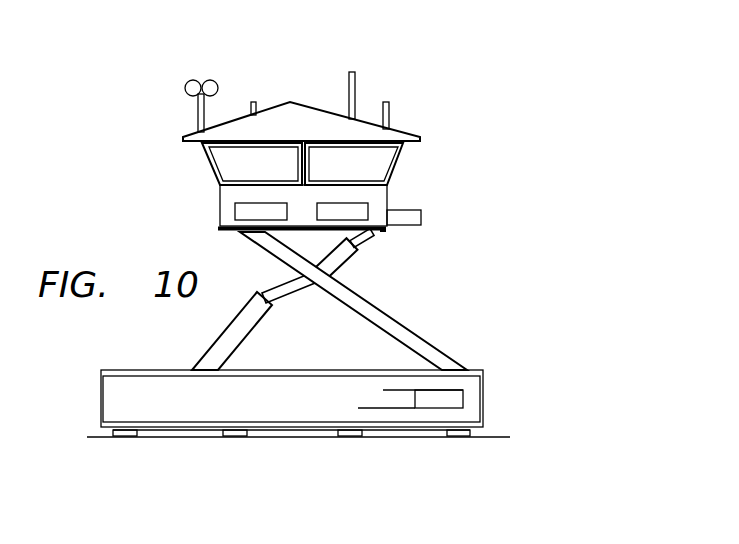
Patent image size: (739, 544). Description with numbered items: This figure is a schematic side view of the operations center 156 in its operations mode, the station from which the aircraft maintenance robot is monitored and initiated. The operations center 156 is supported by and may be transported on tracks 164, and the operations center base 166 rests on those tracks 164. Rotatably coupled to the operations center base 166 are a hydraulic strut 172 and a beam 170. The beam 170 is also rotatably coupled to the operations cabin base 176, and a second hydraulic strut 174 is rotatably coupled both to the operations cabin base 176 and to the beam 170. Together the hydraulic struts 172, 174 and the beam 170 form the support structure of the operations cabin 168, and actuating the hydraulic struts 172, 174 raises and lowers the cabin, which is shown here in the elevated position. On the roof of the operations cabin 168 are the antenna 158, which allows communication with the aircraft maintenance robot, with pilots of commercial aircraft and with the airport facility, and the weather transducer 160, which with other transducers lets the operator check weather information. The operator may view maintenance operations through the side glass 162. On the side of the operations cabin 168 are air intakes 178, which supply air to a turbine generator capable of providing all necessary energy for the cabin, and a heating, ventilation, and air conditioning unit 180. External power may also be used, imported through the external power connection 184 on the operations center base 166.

The operations center 156 is at (540, 150).
The antenna 158 is at (258, 110).
The weather transducer 160 is at (203, 80).
The side glass 162 is at (398, 165).
The tracks 164 is at (113, 433).
The operations center base 166 is at (101, 397).
The operations cabin 168 is at (118, 194).
The beam 170 is at (417, 331).
The hydraulic strut 172 is at (253, 326).
The hydraulic strut 174 is at (348, 268).
The operations cabin base 176 is at (387, 231).
The air intakes 178 is at (345, 202).
The heating, ventilation, and air conditioning unit 180 is at (422, 218).
The external power connection 184 is at (500, 418).